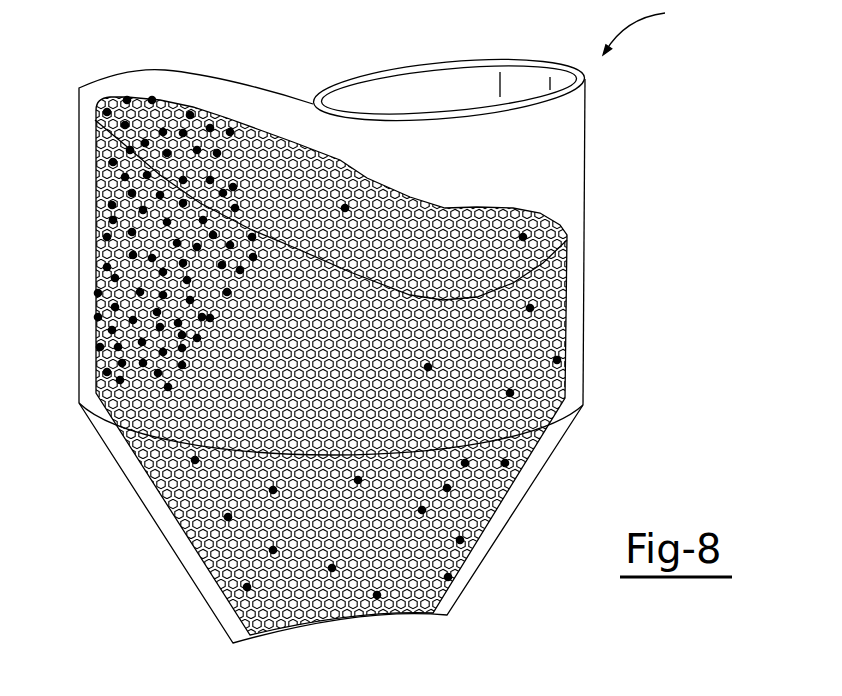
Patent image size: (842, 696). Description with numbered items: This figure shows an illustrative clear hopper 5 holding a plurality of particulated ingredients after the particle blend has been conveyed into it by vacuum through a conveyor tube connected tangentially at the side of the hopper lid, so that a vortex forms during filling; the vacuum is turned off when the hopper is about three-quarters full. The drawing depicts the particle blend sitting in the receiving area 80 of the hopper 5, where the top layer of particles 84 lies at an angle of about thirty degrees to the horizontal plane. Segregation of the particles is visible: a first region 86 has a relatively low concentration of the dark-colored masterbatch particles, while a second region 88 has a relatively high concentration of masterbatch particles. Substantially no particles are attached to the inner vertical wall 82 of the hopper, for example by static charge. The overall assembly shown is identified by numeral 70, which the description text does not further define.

The hopper 5 is at (643, 27).
The filter element assembly 70 is at (331, 321).
The receiving area 80 is at (340, 133).
The inner vertical wall 82 is at (467, 82).
The top layer of particles 84 is at (360, 180).
The first region 86 is at (133, 295).
The second region 88 is at (530, 340).